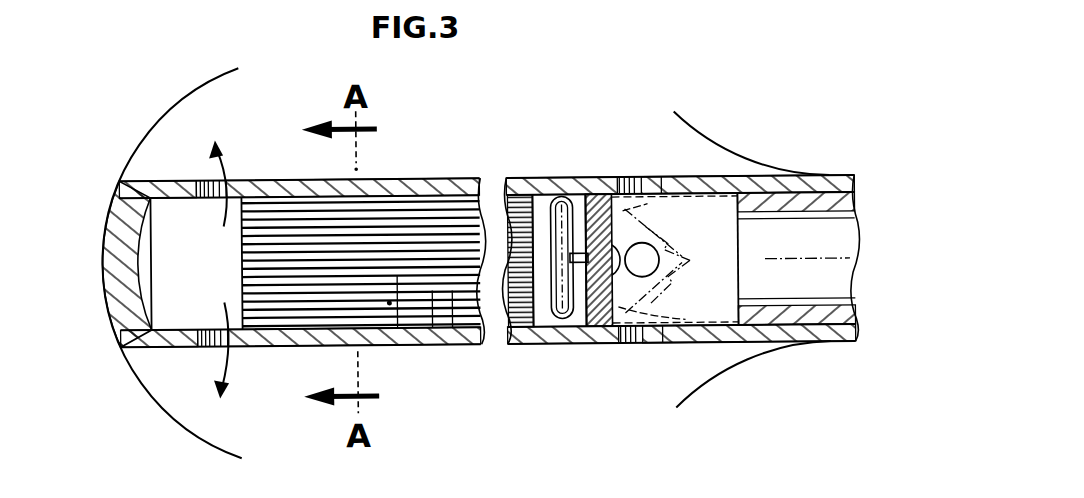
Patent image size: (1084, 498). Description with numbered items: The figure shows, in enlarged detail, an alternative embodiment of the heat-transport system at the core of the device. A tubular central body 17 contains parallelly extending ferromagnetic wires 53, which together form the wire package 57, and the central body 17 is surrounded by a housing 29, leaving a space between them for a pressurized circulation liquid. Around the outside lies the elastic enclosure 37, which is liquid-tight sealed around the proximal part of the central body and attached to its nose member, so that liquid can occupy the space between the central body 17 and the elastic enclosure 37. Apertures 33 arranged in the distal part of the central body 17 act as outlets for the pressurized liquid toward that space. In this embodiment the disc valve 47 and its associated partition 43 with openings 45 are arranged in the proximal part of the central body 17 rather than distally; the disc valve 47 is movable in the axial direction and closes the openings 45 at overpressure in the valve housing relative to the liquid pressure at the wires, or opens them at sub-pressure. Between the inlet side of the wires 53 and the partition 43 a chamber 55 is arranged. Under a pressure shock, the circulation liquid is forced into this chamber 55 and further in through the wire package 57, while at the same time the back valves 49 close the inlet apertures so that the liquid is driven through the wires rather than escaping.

The central body 17 is at (409, 174).
The housing 29 is at (509, 180).
The apertures 33 is at (218, 186).
The elastic enclosure 37 is at (190, 97).
The partition 43 is at (596, 333).
The openings 45 is at (590, 203).
The disc valve 47 is at (563, 197).
The back valves 49 is at (674, 259).
The ferromagnetic wires 53 is at (452, 330).
The chamber 55 is at (543, 263).
The wire package 57 is at (389, 304).